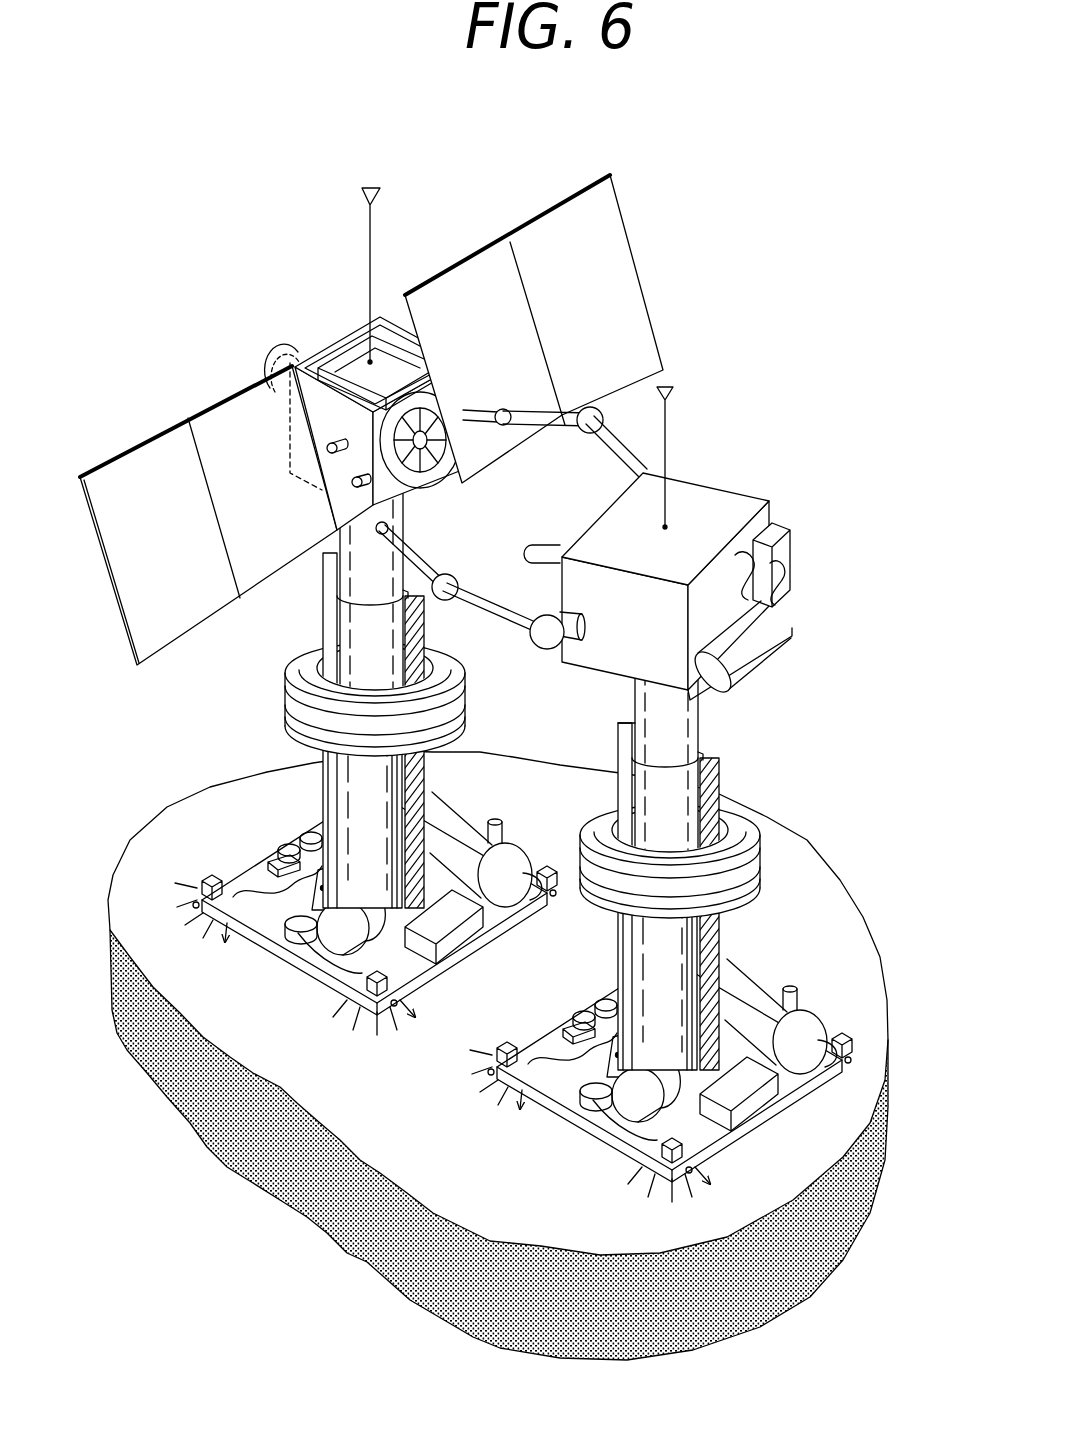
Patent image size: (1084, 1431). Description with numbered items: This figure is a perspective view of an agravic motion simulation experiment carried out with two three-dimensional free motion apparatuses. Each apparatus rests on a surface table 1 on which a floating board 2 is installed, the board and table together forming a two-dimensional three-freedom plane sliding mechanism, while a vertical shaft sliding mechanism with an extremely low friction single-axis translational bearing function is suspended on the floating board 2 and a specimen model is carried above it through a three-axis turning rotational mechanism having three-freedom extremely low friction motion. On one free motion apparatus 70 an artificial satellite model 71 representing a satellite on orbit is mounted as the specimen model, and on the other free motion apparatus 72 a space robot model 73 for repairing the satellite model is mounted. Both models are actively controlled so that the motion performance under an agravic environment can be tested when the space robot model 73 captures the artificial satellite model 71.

The surface table 1 is at (852, 968).
The floating board 2 is at (265, 920).
The free motion apparatus 70 is at (317, 710).
The artificial satellite model 71 is at (343, 333).
The free motion apparatus 72 is at (715, 797).
The space robot model 73 is at (728, 496).